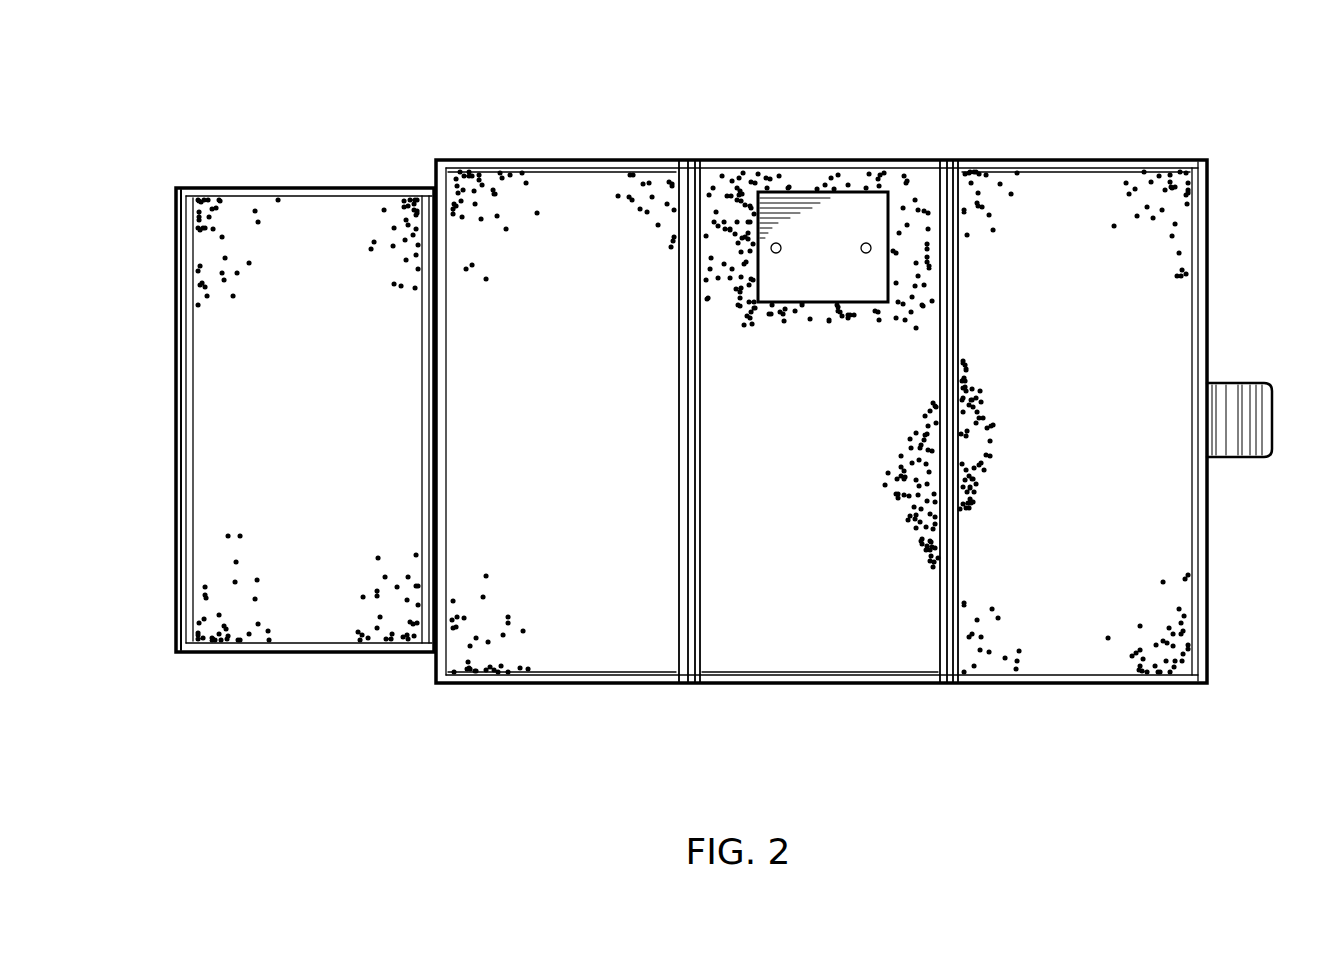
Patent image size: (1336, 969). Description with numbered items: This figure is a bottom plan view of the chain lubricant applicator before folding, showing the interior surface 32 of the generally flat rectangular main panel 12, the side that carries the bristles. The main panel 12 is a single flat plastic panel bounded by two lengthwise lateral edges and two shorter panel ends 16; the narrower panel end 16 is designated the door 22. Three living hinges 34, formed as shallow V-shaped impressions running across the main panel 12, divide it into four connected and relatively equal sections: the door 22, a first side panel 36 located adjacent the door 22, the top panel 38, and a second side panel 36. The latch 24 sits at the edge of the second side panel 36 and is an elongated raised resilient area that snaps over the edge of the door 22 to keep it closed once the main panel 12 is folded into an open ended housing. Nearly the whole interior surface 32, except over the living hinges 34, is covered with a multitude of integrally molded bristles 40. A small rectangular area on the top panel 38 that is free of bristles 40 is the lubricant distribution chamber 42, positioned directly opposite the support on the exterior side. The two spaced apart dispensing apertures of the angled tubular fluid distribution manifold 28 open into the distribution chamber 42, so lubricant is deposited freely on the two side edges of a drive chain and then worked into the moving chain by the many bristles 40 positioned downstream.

The main panel 12 is at (1016, 131).
The panel end 16 is at (176, 567).
The door 22 is at (177, 370).
The latch 24 is at (1270, 384).
The fluid distribution manifold 28 is at (865, 242).
The interior surface 32 is at (745, 548).
The living hinge 34 is at (432, 215).
The side panel 36 is at (547, 163).
The top panel 38 is at (840, 683).
The bristles 40 is at (224, 220).
The lubricant distribution chamber 42 is at (872, 205).